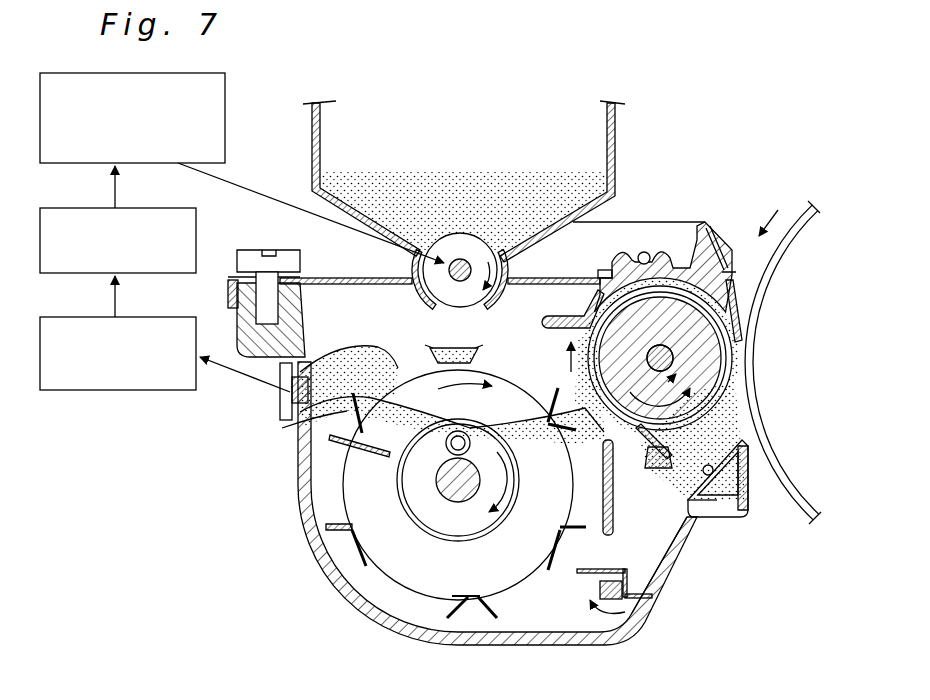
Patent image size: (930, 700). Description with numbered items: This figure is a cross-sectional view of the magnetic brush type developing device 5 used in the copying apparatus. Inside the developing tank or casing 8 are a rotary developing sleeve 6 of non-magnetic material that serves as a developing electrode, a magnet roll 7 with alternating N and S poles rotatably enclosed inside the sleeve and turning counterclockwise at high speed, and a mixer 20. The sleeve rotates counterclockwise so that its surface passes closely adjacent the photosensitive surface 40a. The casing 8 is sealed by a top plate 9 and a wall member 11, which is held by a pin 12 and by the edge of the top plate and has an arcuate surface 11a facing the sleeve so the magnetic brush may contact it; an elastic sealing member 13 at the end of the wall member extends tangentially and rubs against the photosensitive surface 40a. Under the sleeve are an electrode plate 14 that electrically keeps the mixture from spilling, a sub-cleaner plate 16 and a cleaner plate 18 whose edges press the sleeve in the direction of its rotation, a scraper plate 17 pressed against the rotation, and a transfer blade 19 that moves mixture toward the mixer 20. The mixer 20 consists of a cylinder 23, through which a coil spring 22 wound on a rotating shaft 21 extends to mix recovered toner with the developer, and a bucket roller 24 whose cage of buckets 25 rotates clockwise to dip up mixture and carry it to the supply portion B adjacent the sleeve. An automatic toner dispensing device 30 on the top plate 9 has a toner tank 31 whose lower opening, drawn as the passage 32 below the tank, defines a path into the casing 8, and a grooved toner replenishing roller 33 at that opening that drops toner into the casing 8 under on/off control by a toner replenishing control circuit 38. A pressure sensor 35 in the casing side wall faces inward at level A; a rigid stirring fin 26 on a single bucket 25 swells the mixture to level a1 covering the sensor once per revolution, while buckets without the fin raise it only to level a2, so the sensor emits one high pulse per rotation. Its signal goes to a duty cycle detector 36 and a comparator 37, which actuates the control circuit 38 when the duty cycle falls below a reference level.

The developing device 5 is at (497, 337).
The developing sleeve 6 is at (576, 336).
The magnet roll 7 is at (617, 375).
The casing 8 is at (492, 645).
The top plate 9 is at (348, 278).
The wall member 11 is at (677, 258).
The arcuate surface 11a is at (612, 290).
The pin 12 is at (646, 250).
The elastic sealing member 13 is at (736, 312).
The electrode plate 14 is at (710, 476).
The sub-cleaner plate 16 is at (683, 442).
The scraper plate 17 is at (693, 445).
The cleaner plate 18 is at (620, 432).
The transfer blade 19 is at (640, 592).
The mixer 20 is at (408, 547).
The rotating shaft 21 is at (462, 503).
The coil spring 22 is at (470, 447).
The cylinder 23 is at (440, 537).
The bucket roller 24 is at (533, 572).
The bucket 25 is at (428, 345).
The stirring fin 26 is at (377, 457).
The automatic toner dispensing device 30 is at (529, 130).
The toner tank 31 is at (615, 128).
The toner chute 32 is at (433, 300).
The toner replenishing roller 33 is at (443, 243).
The pressure sensor 35 is at (290, 420).
The duty cycle detector 36 is at (80, 390).
The comparator 37 is at (80, 273).
The toner replenishing control circuit 38 is at (80, 163).
The photosensitive surface 40a is at (802, 212).
The developer mixture level with fin a1 is at (322, 356).
The developer mixture level without fin a2 is at (350, 385).
The sensing level A is at (282, 393).
The developer mixture supply portion B is at (571, 401).